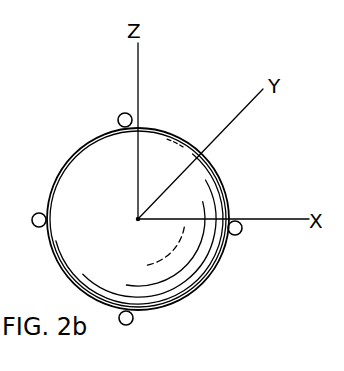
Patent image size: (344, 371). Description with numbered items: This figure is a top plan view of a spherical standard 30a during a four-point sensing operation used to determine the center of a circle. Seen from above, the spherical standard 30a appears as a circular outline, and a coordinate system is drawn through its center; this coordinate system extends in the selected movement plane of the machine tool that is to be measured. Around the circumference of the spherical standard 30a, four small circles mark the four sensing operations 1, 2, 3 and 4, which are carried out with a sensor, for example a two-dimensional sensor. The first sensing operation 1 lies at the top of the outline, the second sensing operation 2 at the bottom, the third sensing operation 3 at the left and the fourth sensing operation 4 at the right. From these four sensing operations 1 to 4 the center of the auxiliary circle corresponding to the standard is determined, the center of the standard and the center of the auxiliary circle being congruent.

The first sensing operation 1 is at (122, 107).
The second sensing operation 2 is at (126, 331).
The third sensing operation 3 is at (30, 232).
The fourth sensing operation 4 is at (243, 237).
The spherical standard 30a is at (187, 303).